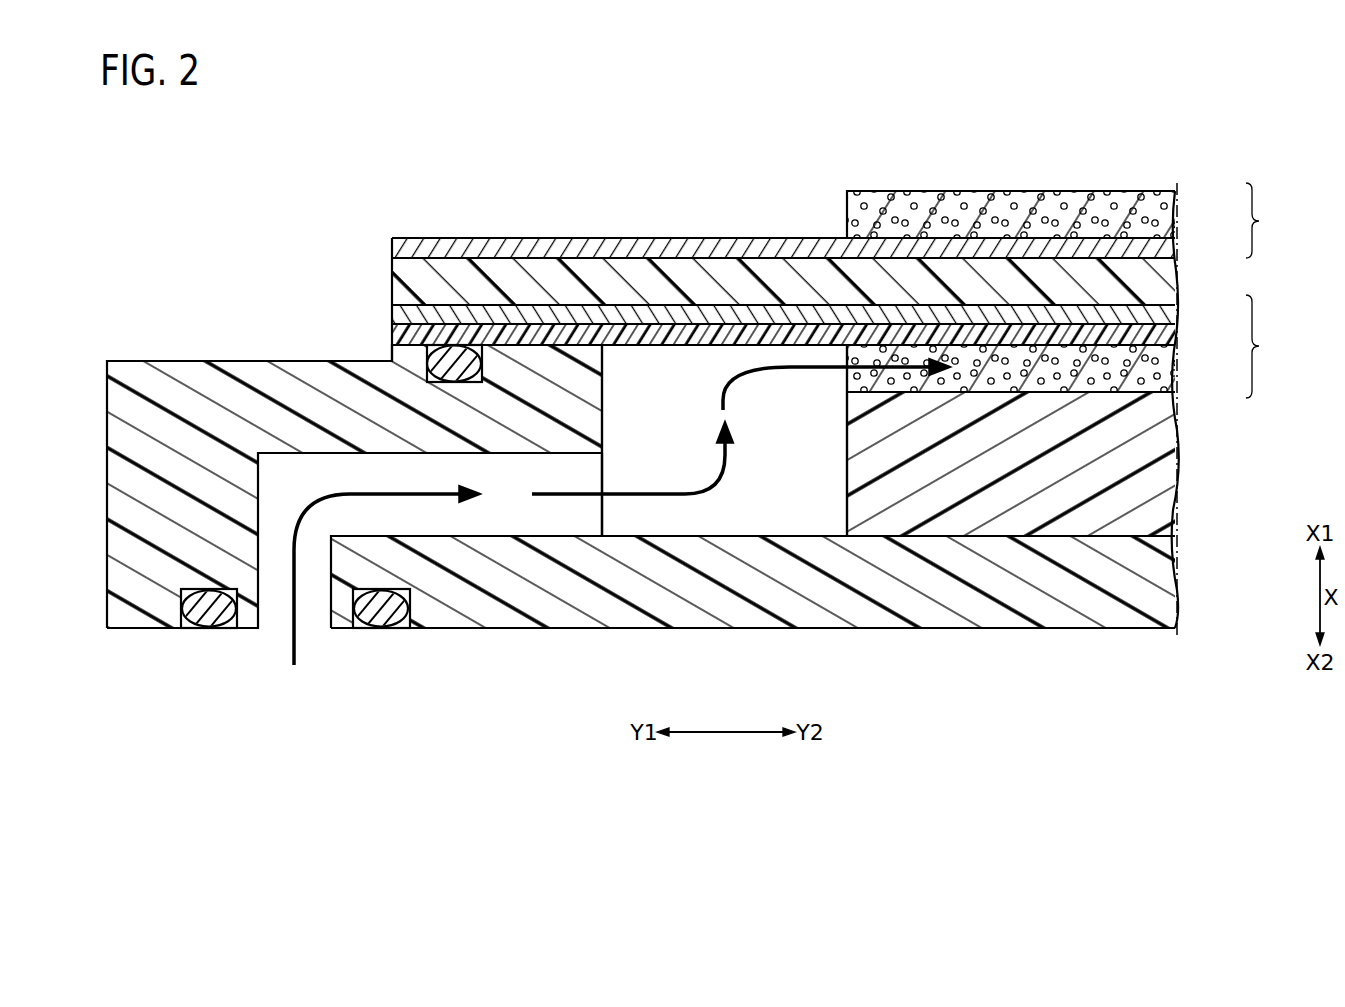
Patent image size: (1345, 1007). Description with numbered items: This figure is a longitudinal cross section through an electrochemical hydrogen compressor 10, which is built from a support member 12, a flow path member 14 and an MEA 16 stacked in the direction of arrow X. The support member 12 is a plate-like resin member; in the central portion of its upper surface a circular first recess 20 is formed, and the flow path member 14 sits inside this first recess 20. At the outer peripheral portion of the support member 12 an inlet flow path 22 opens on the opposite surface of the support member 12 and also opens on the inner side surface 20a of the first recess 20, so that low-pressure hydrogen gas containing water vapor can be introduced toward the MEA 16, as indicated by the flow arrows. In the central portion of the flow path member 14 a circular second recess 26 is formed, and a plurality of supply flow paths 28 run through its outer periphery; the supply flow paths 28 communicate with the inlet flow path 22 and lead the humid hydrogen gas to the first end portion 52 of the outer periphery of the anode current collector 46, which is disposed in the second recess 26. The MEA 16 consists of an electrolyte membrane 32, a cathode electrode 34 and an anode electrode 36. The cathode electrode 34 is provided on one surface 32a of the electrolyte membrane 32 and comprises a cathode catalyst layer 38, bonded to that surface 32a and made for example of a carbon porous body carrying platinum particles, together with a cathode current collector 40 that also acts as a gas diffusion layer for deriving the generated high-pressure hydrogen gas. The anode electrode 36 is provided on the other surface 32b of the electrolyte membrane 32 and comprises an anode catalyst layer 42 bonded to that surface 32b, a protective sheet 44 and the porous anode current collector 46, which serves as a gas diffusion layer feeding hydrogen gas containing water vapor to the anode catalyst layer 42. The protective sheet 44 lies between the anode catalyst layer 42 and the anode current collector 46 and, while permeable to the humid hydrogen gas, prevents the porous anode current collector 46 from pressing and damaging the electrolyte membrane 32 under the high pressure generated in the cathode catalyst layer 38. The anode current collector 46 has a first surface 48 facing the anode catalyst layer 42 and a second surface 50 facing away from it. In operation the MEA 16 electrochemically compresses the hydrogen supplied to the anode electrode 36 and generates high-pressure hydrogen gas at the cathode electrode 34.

The compressor 10 is at (249, 144).
The support member 12 is at (172, 352).
The flow path member 14 is at (1109, 547).
The MEA 16 is at (857, 176).
The first recess 20 is at (993, 537).
The inner side surface 20a is at (603, 387).
The inlet flow path 22 is at (491, 513).
The second recess 26 is at (1013, 392).
The supply flow paths 28 is at (730, 513).
The electrolyte membrane 32 is at (1143, 283).
The one surface of electrolyte membrane 32a is at (932, 258).
The another surface of electrolyte membrane 32b is at (930, 305).
The cathode electrode 34 is at (1267, 220).
The anode electrode 36 is at (1267, 346).
The cathode catalyst layer 38 is at (1155, 252).
The cathode current collector 40 is at (1160, 212).
The anode catalyst layer 42 is at (1152, 316).
The protective sheet 44 is at (1155, 338).
The anode current collector 46 is at (1158, 372).
The first surface 48 is at (1033, 345).
The second surface 50 is at (1130, 393).
The first end portion 52 is at (847, 358).